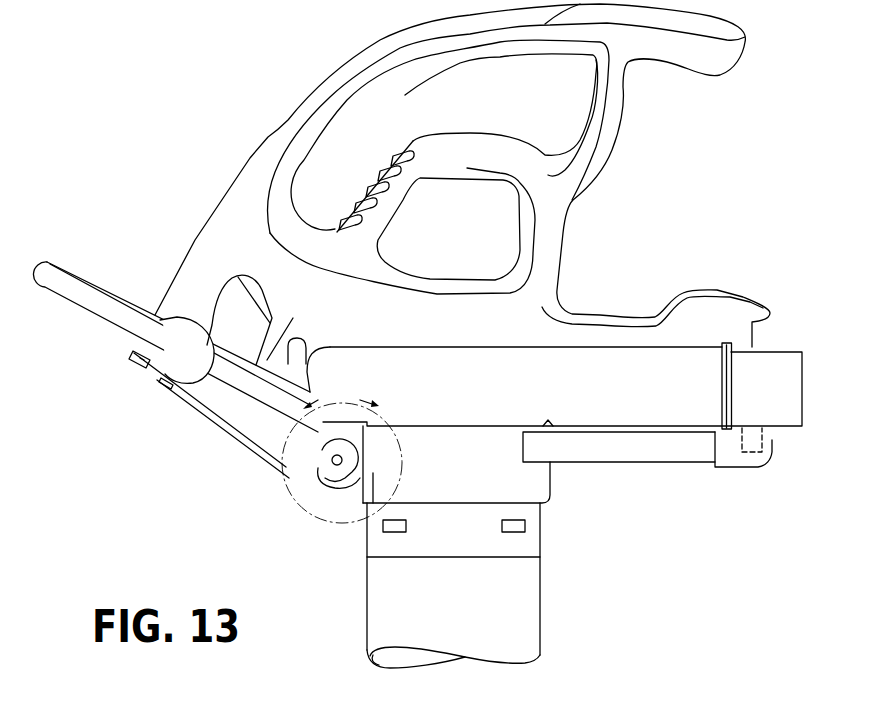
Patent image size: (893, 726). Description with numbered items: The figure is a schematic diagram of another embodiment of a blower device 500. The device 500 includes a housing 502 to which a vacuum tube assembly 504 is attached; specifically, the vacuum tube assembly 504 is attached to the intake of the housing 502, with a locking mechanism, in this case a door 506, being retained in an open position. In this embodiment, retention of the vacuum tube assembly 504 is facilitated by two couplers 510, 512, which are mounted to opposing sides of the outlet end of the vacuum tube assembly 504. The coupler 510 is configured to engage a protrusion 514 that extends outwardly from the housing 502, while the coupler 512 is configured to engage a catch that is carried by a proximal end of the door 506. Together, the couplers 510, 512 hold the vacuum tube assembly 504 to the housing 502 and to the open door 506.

The device 500 is at (137, 58).
The housing 502 is at (557, 250).
The vacuum tube assembly 504 is at (530, 613).
The locking mechanism (door) 506 is at (223, 428).
The coupler 510 is at (625, 448).
The coupler 512 is at (328, 483).
The protrusion 514 is at (772, 451).